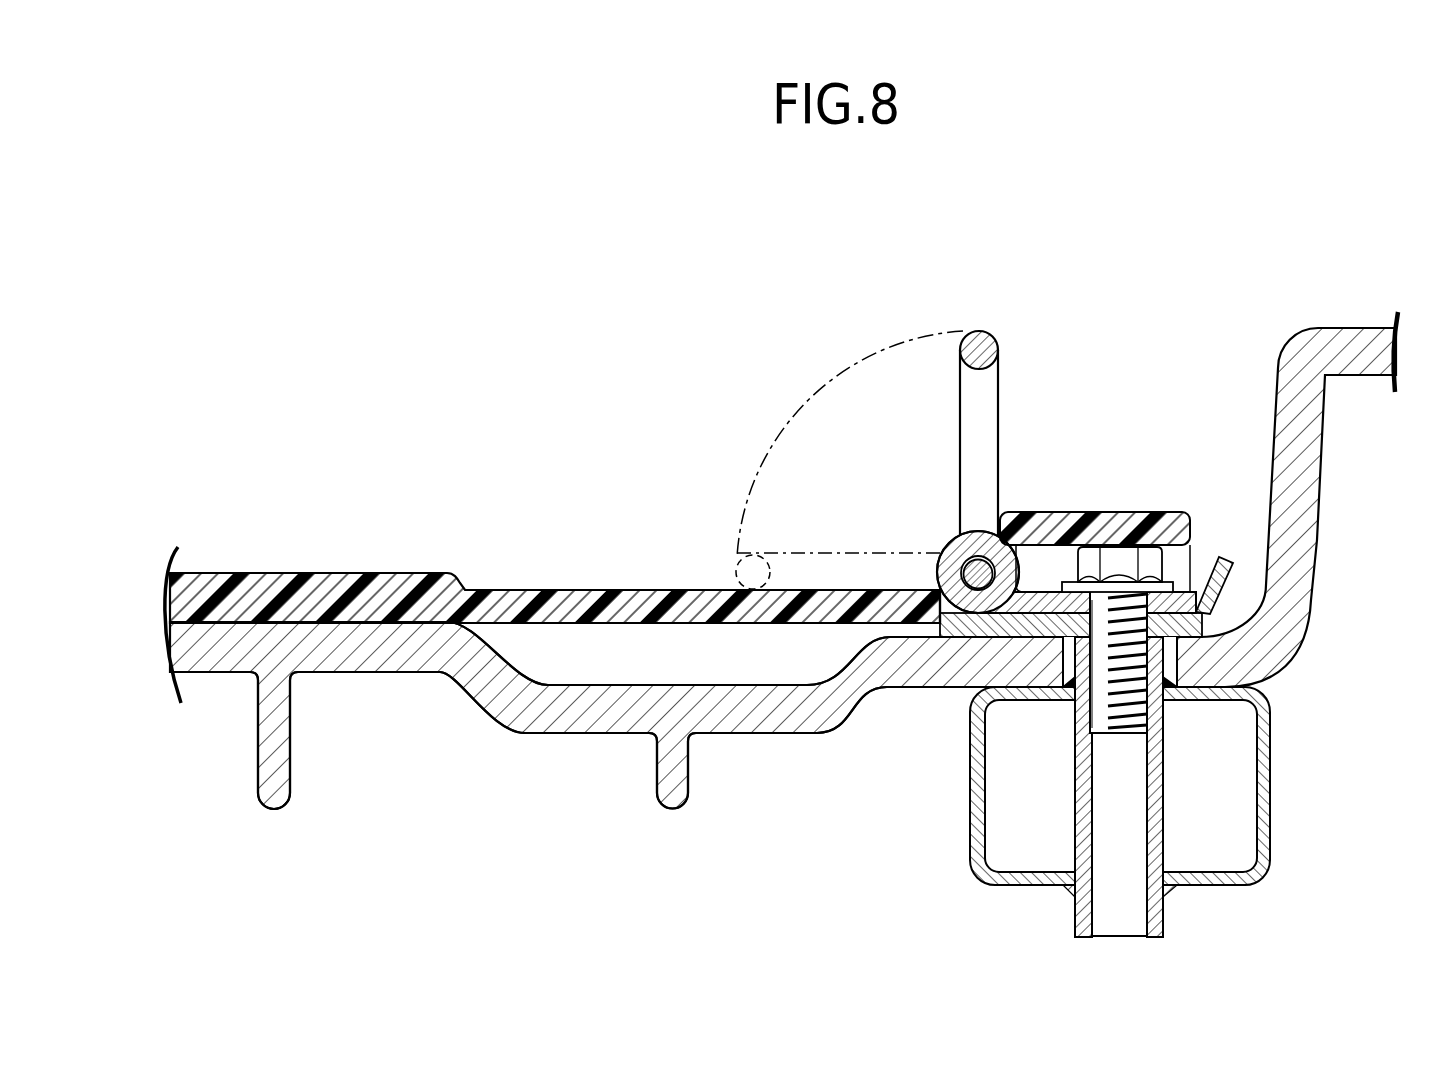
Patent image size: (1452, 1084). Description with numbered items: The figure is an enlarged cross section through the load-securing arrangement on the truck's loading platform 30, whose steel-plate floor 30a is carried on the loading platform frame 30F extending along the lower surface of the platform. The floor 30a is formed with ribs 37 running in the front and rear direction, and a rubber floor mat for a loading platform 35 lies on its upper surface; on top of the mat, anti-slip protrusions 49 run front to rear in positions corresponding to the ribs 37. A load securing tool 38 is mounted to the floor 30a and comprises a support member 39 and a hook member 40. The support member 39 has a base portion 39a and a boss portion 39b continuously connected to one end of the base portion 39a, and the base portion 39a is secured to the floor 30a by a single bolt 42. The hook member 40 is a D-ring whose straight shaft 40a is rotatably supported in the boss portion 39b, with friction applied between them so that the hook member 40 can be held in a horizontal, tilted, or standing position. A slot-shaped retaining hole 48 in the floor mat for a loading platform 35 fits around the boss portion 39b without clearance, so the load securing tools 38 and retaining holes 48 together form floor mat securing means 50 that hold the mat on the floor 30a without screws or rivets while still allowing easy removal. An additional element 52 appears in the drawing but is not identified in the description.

The loading platform 30 is at (1332, 505).
The floor 30a is at (605, 693).
The loading platform frame 30F is at (1272, 808).
The floor mat for a loading platform 35 is at (542, 584).
The rib 37 is at (275, 633).
The load securing tool 38 is at (1006, 428).
The support member 39 is at (1202, 428).
The base portion 39a is at (1188, 628).
The boss portion 39b is at (990, 537).
The hook member 40 is at (990, 340).
The shaft 40a is at (956, 545).
The bolt 42 is at (1078, 705).
The retaining hole 48 is at (960, 581).
The anti-slip protrusion 49 is at (383, 574).
The floor mat securing means 50 is at (946, 319).
The collar 52 is at (1153, 768).